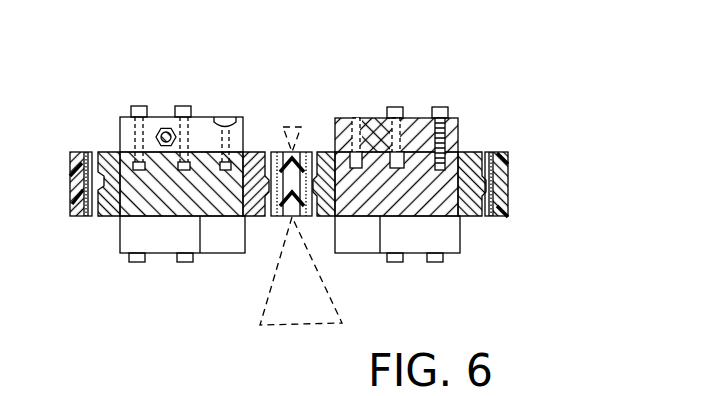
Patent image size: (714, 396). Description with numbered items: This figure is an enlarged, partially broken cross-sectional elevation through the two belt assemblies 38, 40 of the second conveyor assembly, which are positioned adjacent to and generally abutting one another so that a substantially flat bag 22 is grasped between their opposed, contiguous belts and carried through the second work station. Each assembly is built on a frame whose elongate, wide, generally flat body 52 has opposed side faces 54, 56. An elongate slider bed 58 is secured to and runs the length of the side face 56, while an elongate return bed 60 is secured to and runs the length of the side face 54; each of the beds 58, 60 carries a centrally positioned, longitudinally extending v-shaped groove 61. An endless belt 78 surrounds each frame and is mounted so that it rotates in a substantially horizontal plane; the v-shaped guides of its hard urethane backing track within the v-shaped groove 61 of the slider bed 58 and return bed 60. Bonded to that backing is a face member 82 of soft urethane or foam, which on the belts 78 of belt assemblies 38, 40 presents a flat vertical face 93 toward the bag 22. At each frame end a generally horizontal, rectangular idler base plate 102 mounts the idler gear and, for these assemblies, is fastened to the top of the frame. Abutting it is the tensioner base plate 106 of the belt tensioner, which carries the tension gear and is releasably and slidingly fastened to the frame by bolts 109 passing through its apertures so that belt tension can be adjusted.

The bag 22 is at (298, 325).
The belt assembly 38 is at (399, 65).
The belt assembly 40 is at (197, 72).
The body 52 is at (233, 167).
The side face 54 is at (106, 162).
The side face 56 is at (248, 165).
The slider bed 58 is at (260, 217).
The return bed 60 is at (110, 217).
The v-shaped groove 61 is at (105, 182).
The endless belt 78 is at (510, 190).
The face member 82 is at (77, 217).
The flat vertical face 93 is at (72, 195).
The idler base plate 102 is at (218, 117).
The tensioner base plate 106 is at (162, 117).
The bolt 109 is at (138, 106).